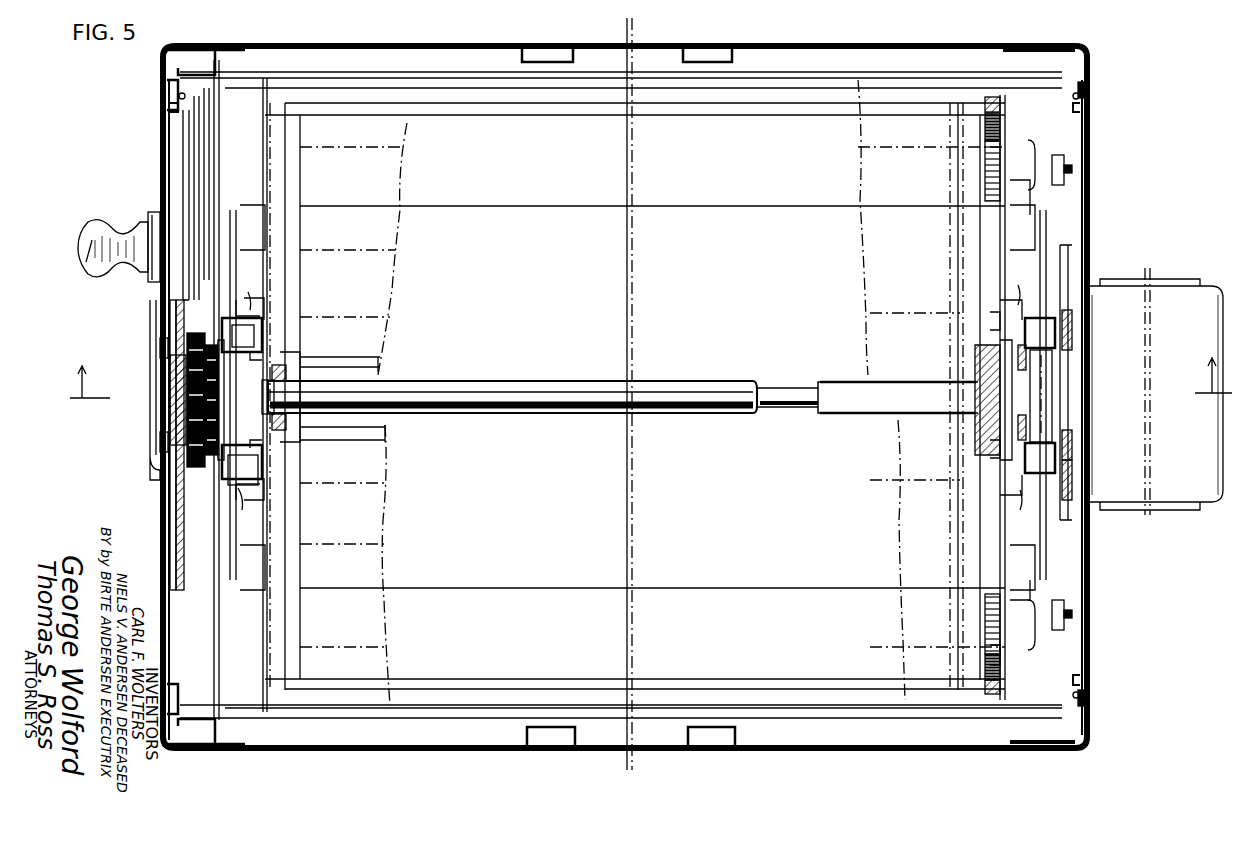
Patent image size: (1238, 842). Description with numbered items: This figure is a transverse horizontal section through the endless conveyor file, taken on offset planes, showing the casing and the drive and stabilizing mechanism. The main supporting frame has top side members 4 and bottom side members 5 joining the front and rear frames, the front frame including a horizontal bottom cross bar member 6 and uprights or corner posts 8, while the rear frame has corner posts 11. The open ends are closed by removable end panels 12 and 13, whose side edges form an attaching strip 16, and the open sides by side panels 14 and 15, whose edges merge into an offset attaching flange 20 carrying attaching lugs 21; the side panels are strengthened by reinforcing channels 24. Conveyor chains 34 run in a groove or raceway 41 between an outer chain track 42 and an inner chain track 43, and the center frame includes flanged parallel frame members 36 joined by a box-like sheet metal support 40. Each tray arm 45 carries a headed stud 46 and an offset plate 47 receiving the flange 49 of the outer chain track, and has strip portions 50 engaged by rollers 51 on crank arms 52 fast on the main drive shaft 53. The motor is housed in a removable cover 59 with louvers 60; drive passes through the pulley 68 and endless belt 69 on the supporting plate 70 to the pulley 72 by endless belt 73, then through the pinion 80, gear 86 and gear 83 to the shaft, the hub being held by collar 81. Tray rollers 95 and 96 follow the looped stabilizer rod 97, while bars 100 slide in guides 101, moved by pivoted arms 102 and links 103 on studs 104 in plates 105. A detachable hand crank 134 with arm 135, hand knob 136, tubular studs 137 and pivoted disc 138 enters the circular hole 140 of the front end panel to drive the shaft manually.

The top side members 4 is at (651, 367).
The bottom side members 5 is at (830, 72).
The horizontal bottom cross bar member 6 is at (214, 150).
The uprights or corner posts 8 is at (206, 70).
The uprights or corner posts 11 is at (1046, 52).
The end panel 12 is at (163, 130).
The end panel 13 is at (1090, 170).
The side panel 14 is at (790, 46).
The side panel 15 is at (828, 718).
The attaching strip 16 is at (170, 99).
The offset attaching flange 20 is at (172, 108).
The attaching lugs 21 is at (166, 88).
The reinforcing channels 24 is at (540, 60).
The conveyor chains 34 is at (235, 472).
The flanged parallel frame members 36 is at (285, 432).
The box-like sheet metal support 40 is at (790, 408).
The groove or raceway 41 is at (255, 330).
The outer chain track 42 is at (230, 330).
The inner chain track 43 is at (252, 358).
The tray arms 45 is at (229, 212).
The headed stud 46 is at (260, 238).
The offset plate 47 is at (250, 292).
The flange 49 is at (248, 315).
The strip portions 50 is at (262, 298).
The rollers 51 is at (282, 372).
The crank arms 52 is at (275, 430).
The main drive shaft 53 is at (514, 405).
The removable cover 59 is at (1208, 288).
The louvers 60 is at (1172, 280).
The pulley 68 is at (210, 105).
The endless belt 69 is at (200, 132).
The supporting plate 70 is at (190, 178).
The pulley 72 is at (178, 520).
The endless belt 73 is at (176, 560).
The pinion 80 is at (172, 397).
The collar 81 is at (178, 405).
The gear 83 is at (187, 440).
The gear 86 is at (188, 450).
The rollers 95 is at (995, 318).
The rollers 96 is at (986, 135).
The looped stabilizer rod 97 is at (1001, 105).
The bars 100 is at (1017, 394).
The guides 101 is at (1021, 390).
The pivoted arms 102 is at (1068, 262).
The links 103 is at (1062, 182).
The studs 104 is at (1072, 345).
The plates 105 is at (1072, 472).
The hand crank 134 is at (132, 222).
The arm 135 is at (150, 290).
The hand knob 136 is at (108, 250).
The tubular studs 137 is at (130, 377).
The pivoted disc 138 is at (136, 386).
The circular hole 140 is at (160, 458).